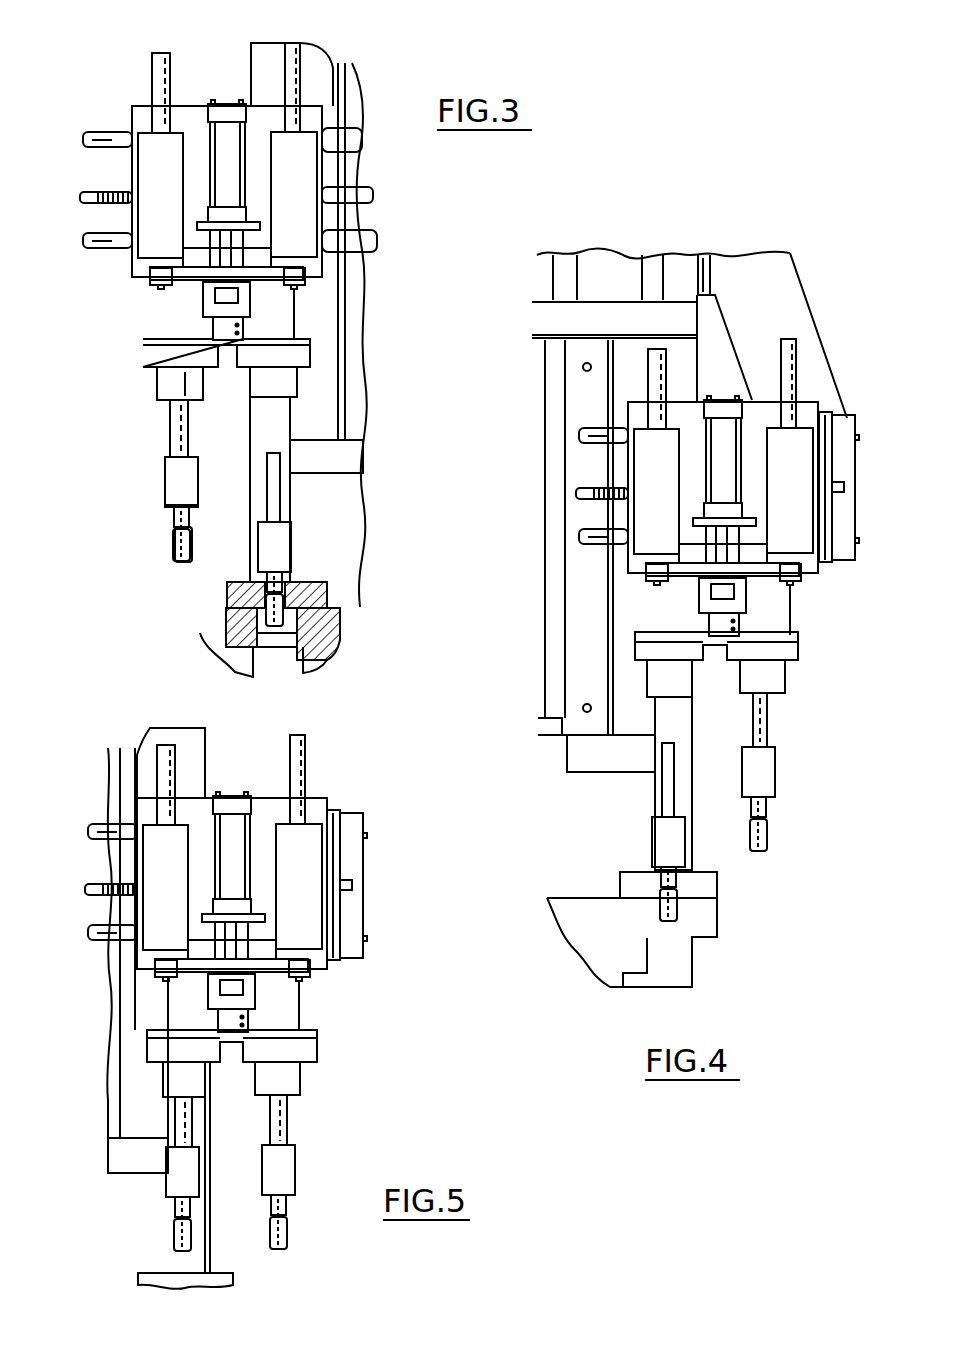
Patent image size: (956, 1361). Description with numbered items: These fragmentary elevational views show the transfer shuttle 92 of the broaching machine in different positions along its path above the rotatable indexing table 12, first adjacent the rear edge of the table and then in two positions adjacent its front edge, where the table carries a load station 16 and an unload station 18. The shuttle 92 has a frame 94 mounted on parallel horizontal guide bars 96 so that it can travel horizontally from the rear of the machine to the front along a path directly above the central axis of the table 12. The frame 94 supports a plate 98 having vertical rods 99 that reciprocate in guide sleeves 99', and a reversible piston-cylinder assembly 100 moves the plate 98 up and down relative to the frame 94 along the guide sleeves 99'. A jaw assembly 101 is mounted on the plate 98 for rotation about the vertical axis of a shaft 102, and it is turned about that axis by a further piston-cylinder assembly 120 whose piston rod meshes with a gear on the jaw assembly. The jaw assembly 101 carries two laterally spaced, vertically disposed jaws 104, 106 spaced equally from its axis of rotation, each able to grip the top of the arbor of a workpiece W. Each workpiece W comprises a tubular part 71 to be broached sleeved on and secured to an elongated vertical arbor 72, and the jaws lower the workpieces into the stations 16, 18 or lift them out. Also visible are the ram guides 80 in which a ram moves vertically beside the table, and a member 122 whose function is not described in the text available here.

In FIG. 3, the rotatable indexing table 12 is at (348, 613).
In FIG. 4, the rotatable indexing table 12 is at (593, 910).
In FIG. 3, the load station 16 is at (227, 590).
In FIG. 5, the load station 16 is at (233, 1278).
In FIG. 4, the unload station 18 is at (717, 885).
In FIG. 3, the tubular part 71 is at (163, 482).
In FIG. 3, the arbor 72 is at (173, 547).
In FIG. 4, the ram guides 80 is at (577, 675).
In FIG. 3, the transfer shuttle 92 is at (185, 92).
In FIG. 4, the transfer shuttle 92 is at (835, 345).
In FIG. 5, the transfer shuttle 92 is at (361, 759).
In FIG. 3, the frame 94 is at (136, 107).
In FIG. 4, the frame 94 is at (755, 463).
In FIG. 5, the frame 94 is at (202, 857).
In FIG. 3, the guide bars 96 is at (103, 134).
In FIG. 4, the guide bars 96 is at (559, 502).
In FIG. 5, the guide bars 96 is at (101, 904).
In FIG. 3, the plate 98 is at (172, 285).
In FIG. 4, the plate 98 is at (656, 599).
In FIG. 5, the plate 98 is at (268, 995).
In FIG. 3, the vertical rods 99 is at (256, 71).
In FIG. 4, the vertical rods 99 is at (749, 350).
In FIG. 5, the vertical rods 99 is at (254, 761).
In FIG. 3, the guide sleeves 99' is at (230, 165).
In FIG. 4, the guide sleeves 99' is at (771, 470).
In FIG. 5, the guide sleeves 99' is at (286, 871).
In FIG. 3, the reversible piston-cylinder assembly 100 is at (223, 130).
In FIG. 4, the reversible piston-cylinder assembly 100 is at (736, 432).
In FIG. 5, the reversible piston-cylinder assembly 100 is at (236, 852).
In FIG. 3, the jaw assembly 101 is at (193, 327).
In FIG. 4, the jaw assembly 101 is at (815, 630).
In FIG. 5, the jaw assembly 101 is at (143, 1038).
In FIG. 3, the shaft 102 is at (243, 330).
In FIG. 3, the jaw 104 is at (297, 382).
In FIG. 4, the jaw 104 is at (685, 687).
In FIG. 5, the jaw 104 is at (297, 1080).
In FIG. 3, the jaw 106 is at (158, 380).
In FIG. 4, the jaw 106 is at (785, 683).
In FIG. 5, the jaw 106 is at (168, 1072).
In FIG. 3, the piston-cylinder assembly 120 is at (212, 296).
In FIG. 4, the piston-cylinder assembly 120 is at (761, 607).
In FIG. 5, the piston-cylinder assembly 120 is at (271, 1003).
In FIG. 3, the threaded rod 122 is at (83, 208).
In FIG. 4, the threaded rod 122 is at (553, 504).
In FIG. 5, the threaded rod 122 is at (91, 871).
In FIG. 3, the workpiece W is at (160, 457).
In FIG. 4, the workpiece W is at (782, 760).
In FIG. 5, the workpiece W is at (298, 1147).